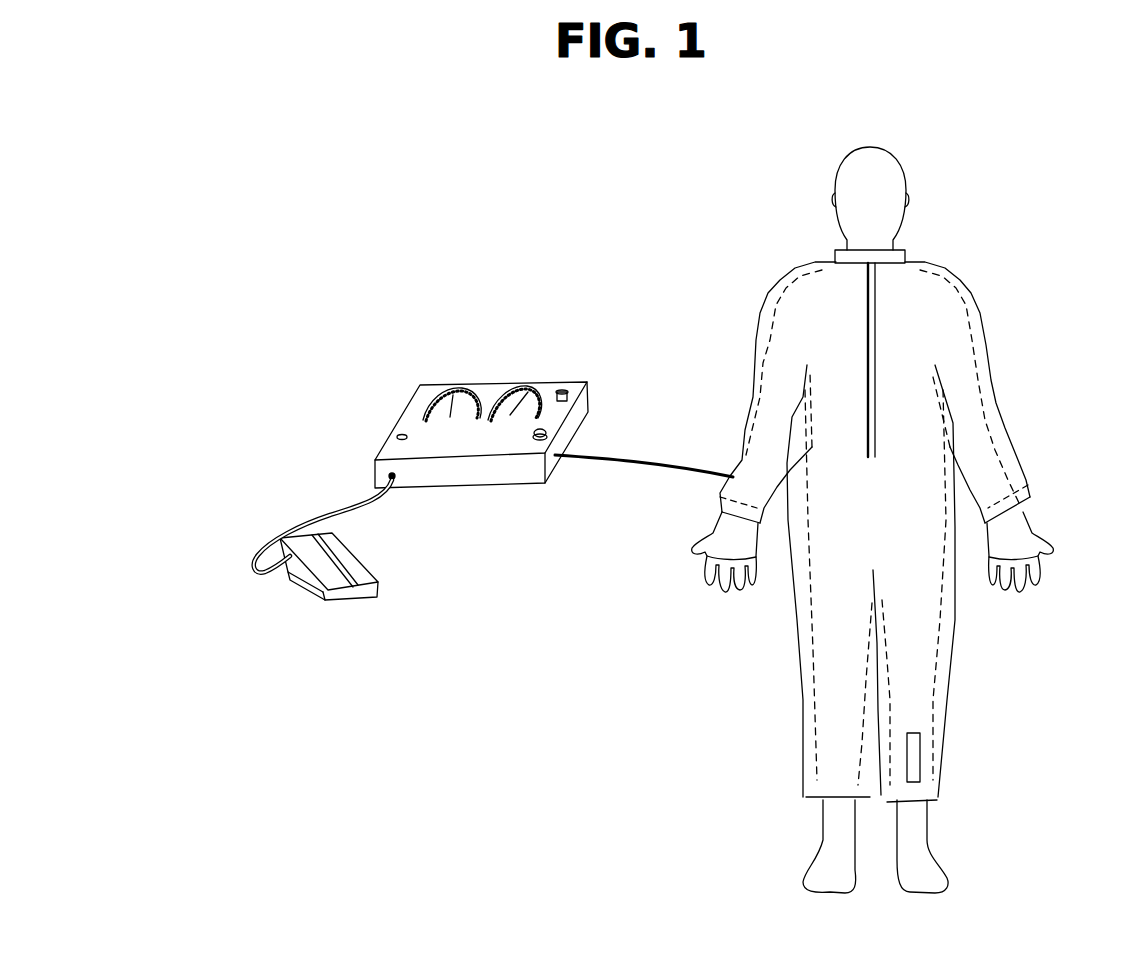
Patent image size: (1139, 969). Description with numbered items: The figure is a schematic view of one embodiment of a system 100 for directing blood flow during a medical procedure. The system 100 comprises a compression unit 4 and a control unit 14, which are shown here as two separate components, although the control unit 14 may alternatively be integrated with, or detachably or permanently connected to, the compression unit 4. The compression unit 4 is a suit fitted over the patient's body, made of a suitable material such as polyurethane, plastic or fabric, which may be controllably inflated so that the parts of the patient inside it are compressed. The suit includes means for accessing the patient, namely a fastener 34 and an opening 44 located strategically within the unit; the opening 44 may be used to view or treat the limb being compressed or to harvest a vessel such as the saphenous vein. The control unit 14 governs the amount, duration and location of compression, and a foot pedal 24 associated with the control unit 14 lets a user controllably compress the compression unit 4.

The system 100 is at (108, 784).
The compression unit 4 is at (778, 283).
The control unit 14 is at (475, 383).
The foot pedal 24 is at (330, 593).
The fastener 34 is at (877, 316).
The opening 44 is at (920, 743).